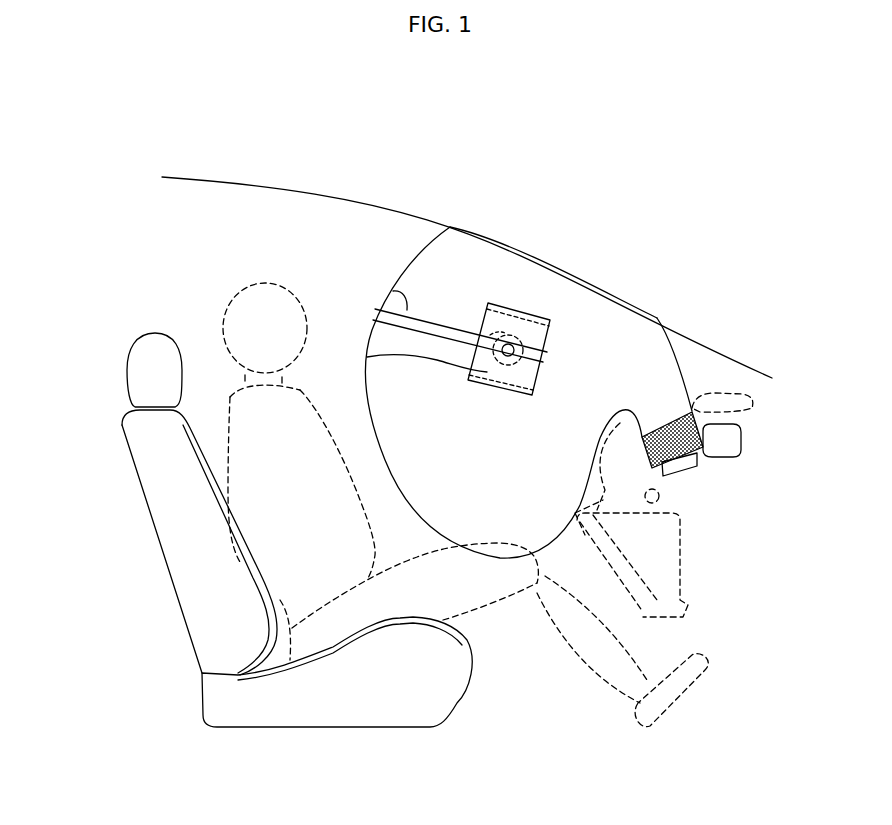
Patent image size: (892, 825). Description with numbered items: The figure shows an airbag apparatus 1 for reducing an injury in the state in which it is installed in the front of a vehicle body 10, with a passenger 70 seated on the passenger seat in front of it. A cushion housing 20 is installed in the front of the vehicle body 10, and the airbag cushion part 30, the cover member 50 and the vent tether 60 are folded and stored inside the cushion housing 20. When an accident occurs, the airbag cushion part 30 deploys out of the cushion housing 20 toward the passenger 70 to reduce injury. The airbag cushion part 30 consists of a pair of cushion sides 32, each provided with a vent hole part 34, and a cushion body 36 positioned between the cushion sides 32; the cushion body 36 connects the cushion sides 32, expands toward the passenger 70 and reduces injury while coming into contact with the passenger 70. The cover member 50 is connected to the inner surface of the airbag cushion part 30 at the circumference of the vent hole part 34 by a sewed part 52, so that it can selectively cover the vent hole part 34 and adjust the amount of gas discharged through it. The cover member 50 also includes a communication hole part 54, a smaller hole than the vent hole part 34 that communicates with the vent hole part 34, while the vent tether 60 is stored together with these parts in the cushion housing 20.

The airbag apparatus 1 is at (362, 259).
The vehicle body 10 is at (348, 201).
The cushion housing 20 is at (705, 435).
The airbag cushion part 30 is at (420, 230).
The cushion sides 32 is at (600, 320).
The vent hole part 34 is at (517, 333).
The cushion body 36 is at (408, 266).
The cover member 50 is at (520, 323).
The sewed part 52 is at (503, 308).
The communication hole part 54 is at (367, 357).
The vent tether 60 is at (393, 292).
The passenger 70 is at (240, 293).